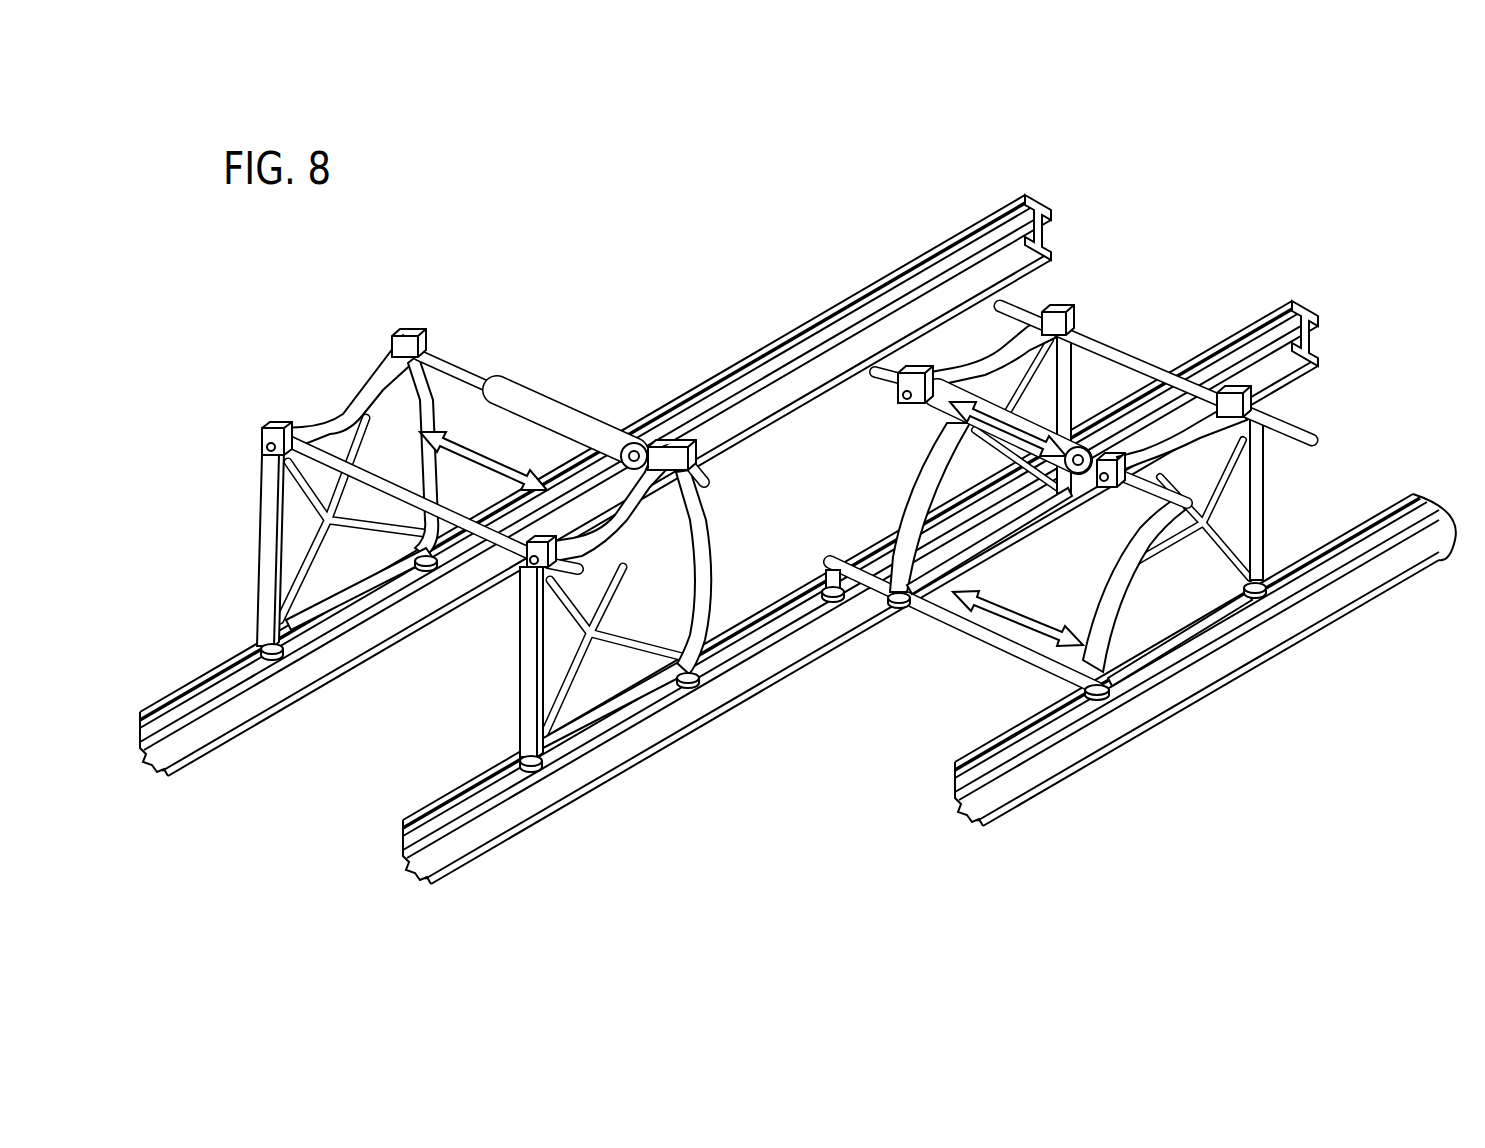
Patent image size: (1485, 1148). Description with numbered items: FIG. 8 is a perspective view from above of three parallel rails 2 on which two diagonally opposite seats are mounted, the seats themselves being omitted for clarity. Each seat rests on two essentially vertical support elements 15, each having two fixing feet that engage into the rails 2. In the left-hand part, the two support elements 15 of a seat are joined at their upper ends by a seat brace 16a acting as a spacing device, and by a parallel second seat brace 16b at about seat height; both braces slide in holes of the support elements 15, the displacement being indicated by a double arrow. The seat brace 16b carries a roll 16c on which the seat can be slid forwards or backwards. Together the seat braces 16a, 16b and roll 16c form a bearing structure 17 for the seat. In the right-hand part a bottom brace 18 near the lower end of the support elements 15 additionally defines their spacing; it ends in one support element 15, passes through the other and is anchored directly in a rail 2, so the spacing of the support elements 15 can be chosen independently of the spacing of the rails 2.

The rail 2 is at (750, 357).
The support element 15 is at (338, 412).
The seat brace 16a is at (320, 462).
The second seat brace 16b is at (470, 380).
The roll 16c is at (561, 416).
The bearing structure 17 is at (352, 346).
The bottom brace 18 is at (985, 648).